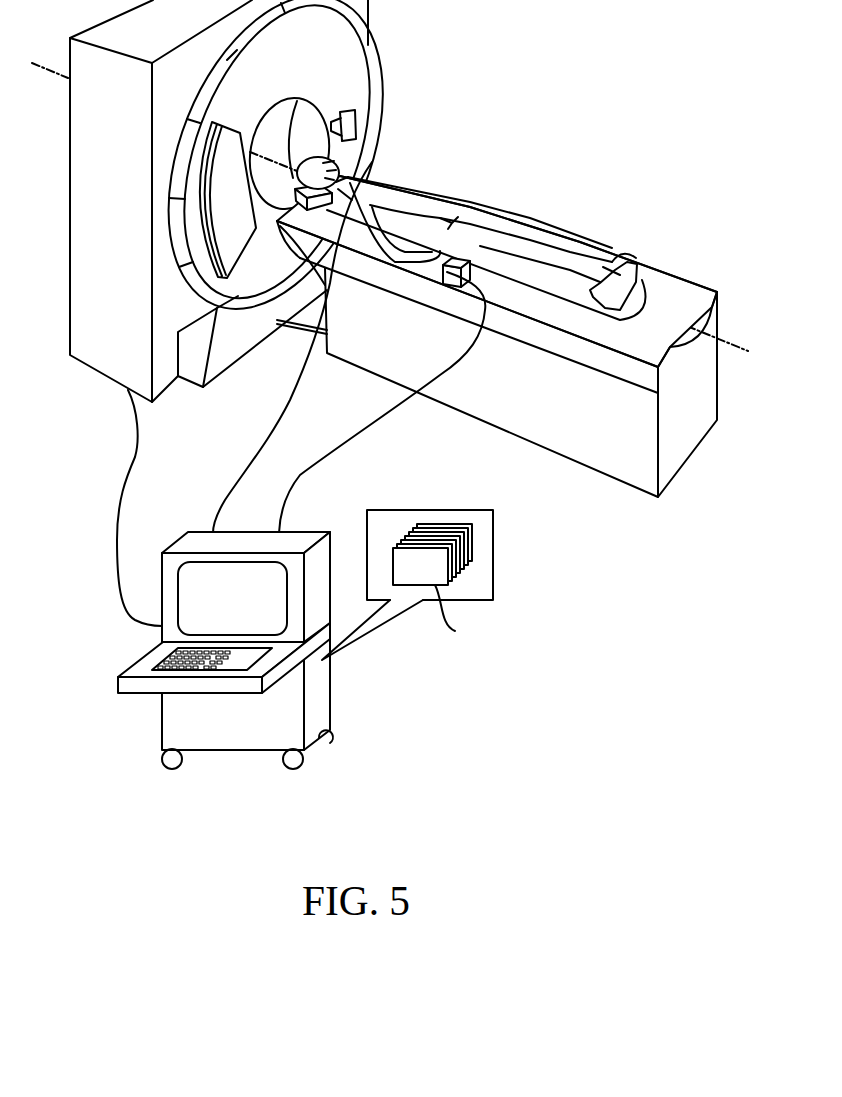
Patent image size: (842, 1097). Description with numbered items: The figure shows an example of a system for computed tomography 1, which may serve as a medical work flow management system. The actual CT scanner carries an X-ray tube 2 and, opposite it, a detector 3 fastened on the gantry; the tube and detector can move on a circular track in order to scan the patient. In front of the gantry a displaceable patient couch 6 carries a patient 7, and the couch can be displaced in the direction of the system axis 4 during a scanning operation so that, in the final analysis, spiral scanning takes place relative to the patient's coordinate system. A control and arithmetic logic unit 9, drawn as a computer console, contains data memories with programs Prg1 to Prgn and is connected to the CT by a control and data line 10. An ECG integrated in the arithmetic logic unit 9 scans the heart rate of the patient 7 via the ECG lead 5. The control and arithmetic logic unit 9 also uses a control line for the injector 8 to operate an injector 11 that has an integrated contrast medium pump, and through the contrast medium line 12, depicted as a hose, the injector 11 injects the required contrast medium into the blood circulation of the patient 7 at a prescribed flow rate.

The system for computed tomography 1 is at (527, 93).
The X-ray tube 2 is at (355, 125).
The detector 3 is at (227, 260).
The system axis 4 is at (738, 344).
The ECG lead 5 is at (245, 455).
The displaceable patient couch 6 is at (482, 395).
The patient 7 is at (380, 177).
The control line for the injector 8 is at (296, 472).
The control and arithmetic logic unit 9 is at (320, 702).
The control and data line to the CT 10 is at (128, 470).
The injector 11 is at (453, 263).
The contrast medium line 12 is at (397, 262).